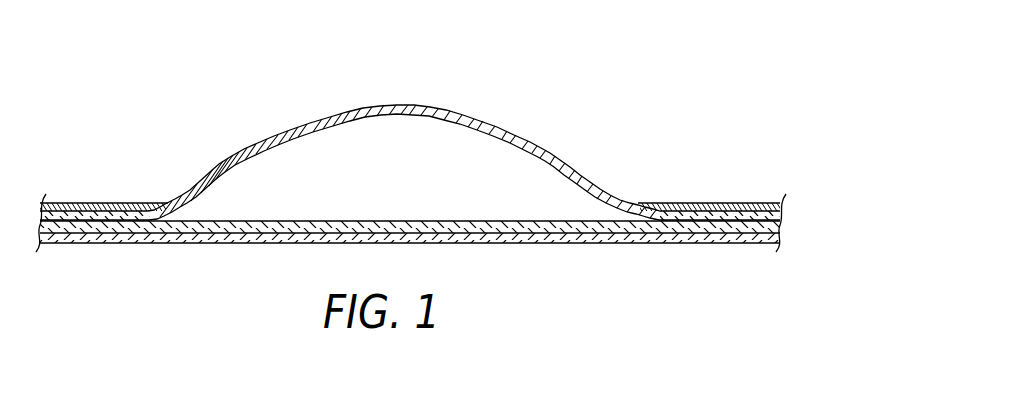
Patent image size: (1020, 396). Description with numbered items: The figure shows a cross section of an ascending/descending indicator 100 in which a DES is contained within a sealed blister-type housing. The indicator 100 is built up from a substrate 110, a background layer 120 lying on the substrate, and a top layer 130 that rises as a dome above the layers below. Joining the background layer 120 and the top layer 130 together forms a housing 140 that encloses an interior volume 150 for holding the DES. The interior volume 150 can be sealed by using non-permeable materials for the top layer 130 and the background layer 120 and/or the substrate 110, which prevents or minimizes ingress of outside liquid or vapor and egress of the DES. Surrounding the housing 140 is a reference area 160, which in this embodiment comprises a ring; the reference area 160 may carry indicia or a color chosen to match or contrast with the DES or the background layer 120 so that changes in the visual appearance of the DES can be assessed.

The indicator 100 is at (514, 96).
The substrate 110 is at (655, 254).
The background layer 120 is at (377, 220).
The top layer 130 is at (403, 104).
The housing 140 is at (258, 153).
The interior volume 150 is at (543, 182).
The reference area 160 is at (110, 204).